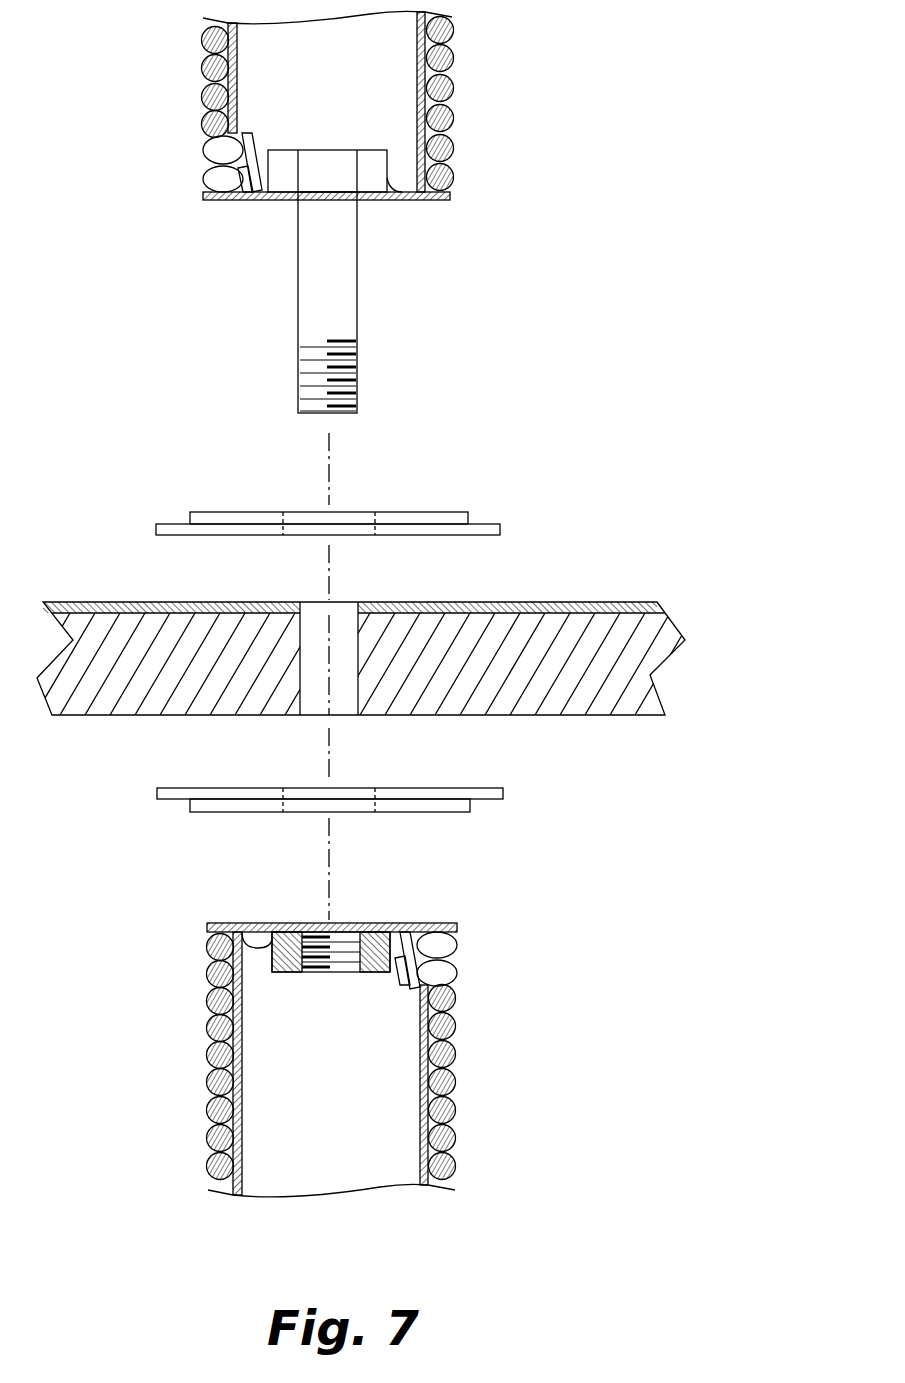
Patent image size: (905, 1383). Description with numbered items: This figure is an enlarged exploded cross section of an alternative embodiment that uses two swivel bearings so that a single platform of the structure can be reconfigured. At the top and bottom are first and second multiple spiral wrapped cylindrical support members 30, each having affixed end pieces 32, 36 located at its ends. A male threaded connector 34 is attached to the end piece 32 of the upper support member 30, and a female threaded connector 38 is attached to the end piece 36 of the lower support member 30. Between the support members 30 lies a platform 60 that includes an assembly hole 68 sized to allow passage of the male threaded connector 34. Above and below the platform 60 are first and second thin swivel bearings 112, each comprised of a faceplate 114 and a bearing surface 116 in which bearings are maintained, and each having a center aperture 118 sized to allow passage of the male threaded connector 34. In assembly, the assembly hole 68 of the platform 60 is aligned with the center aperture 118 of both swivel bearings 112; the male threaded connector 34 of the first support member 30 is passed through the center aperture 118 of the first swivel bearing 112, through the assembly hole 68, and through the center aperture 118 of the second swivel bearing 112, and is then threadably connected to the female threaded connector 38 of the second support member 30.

The support member 30 is at (490, 48).
The end piece 32 is at (452, 194).
The male threaded connector 34 is at (343, 242).
The end piece 36 is at (457, 927).
The female threaded connector 38 is at (320, 938).
The platform 60 is at (665, 612).
The assembly hole 68 is at (342, 613).
The swivel bearing 112 is at (354, 665).
The faceplate 114 is at (500, 527).
The bearing surface 116 is at (189, 517).
The center aperture 118 is at (360, 498).